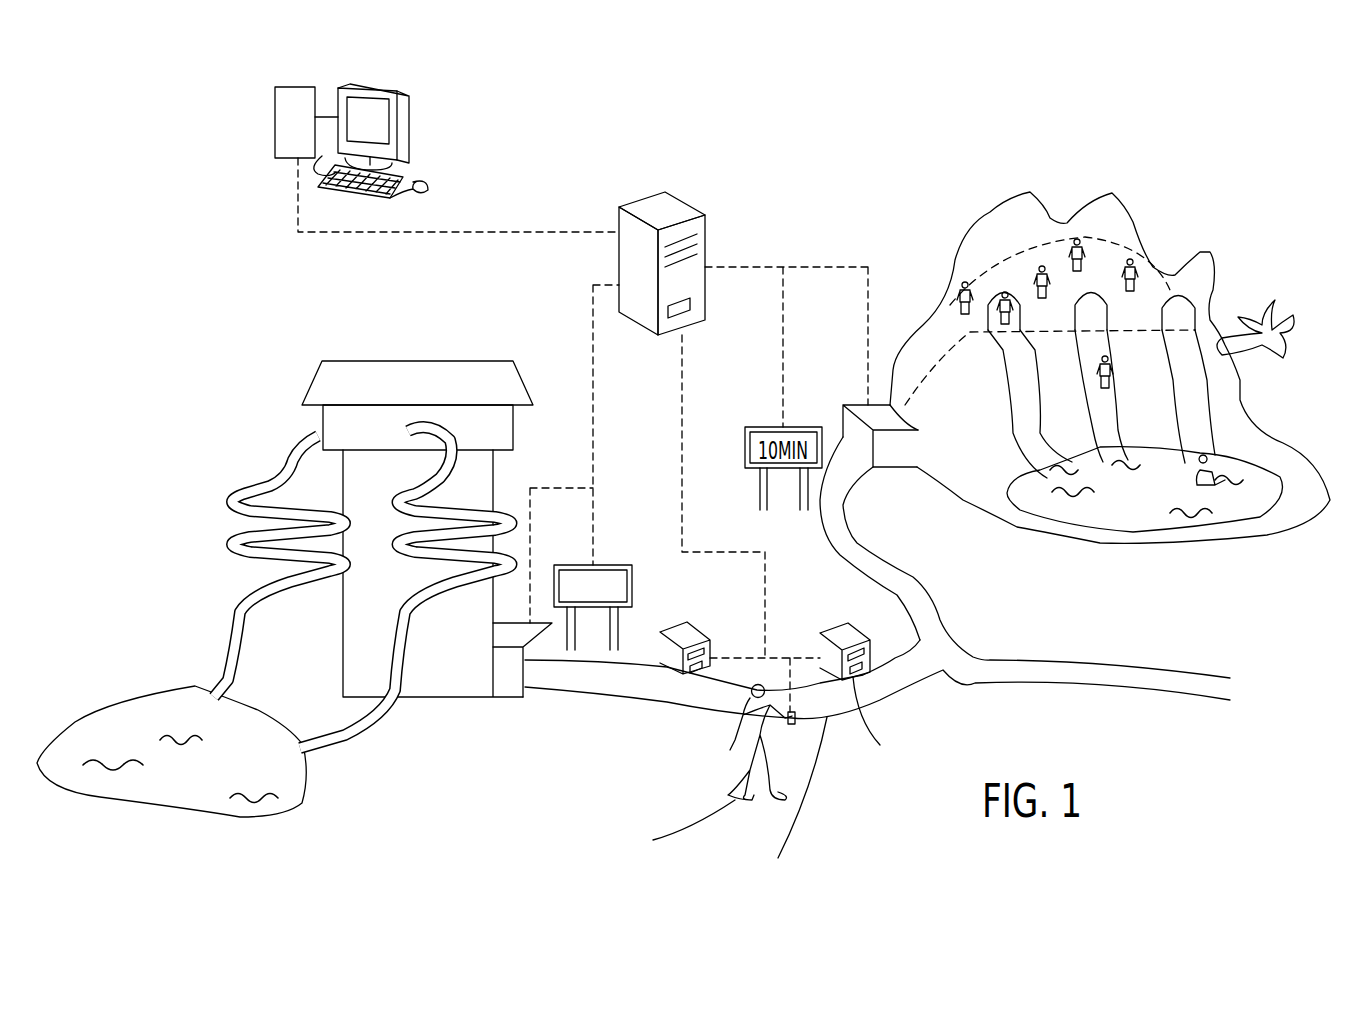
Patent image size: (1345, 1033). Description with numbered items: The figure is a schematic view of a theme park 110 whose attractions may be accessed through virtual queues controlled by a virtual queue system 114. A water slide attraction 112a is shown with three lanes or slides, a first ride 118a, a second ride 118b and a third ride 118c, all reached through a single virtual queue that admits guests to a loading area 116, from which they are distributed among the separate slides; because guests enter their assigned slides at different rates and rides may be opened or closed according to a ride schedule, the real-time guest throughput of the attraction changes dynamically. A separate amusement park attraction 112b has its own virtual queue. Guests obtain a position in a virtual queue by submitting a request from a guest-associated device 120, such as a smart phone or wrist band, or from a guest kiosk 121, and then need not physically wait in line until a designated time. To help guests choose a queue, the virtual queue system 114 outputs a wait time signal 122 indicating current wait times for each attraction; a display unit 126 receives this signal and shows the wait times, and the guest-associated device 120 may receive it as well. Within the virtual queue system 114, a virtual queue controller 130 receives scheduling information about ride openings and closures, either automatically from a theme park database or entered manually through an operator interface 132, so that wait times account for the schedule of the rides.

The theme park 110 is at (857, 170).
The water slide attraction 112a is at (1240, 302).
The amusement park attraction 112b is at (287, 434).
The virtual queue system 114 is at (713, 244).
The loading area 116 is at (1020, 284).
The first ride 118a is at (1017, 390).
The second ride 118b is at (1113, 343).
The third ride 118c is at (1197, 383).
The guest-associated device 120 is at (790, 718).
The guest kiosk 121 is at (703, 628).
The wait time signal 122 is at (593, 358).
The display unit 126 is at (610, 565).
The virtual queue controller 130 is at (651, 207).
The operator interface 132 is at (376, 92).